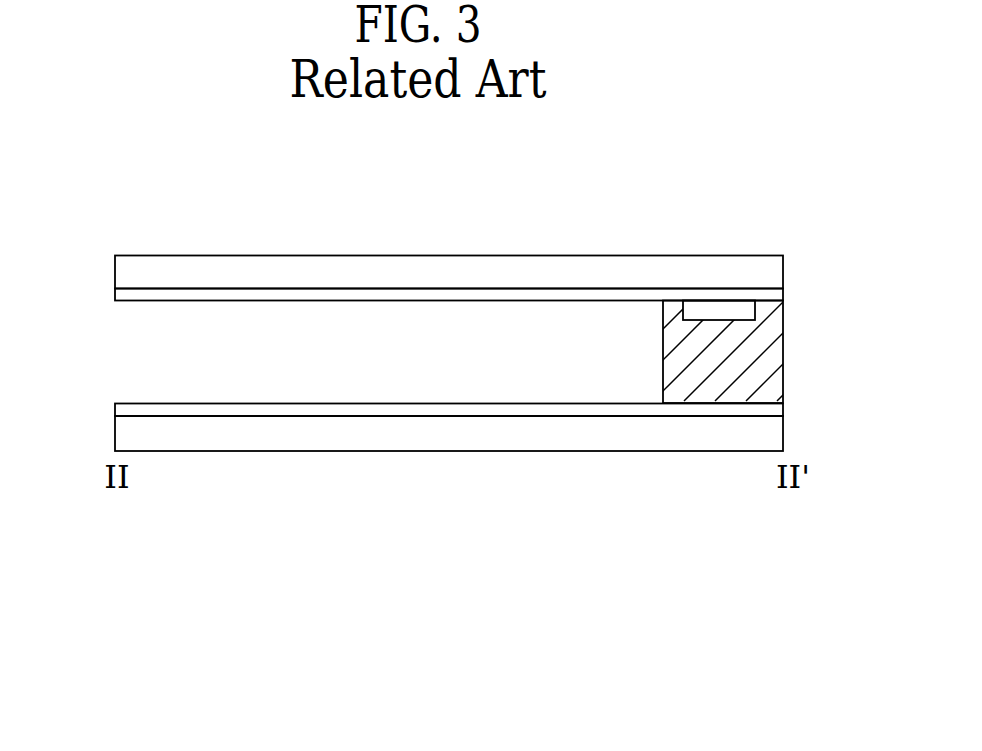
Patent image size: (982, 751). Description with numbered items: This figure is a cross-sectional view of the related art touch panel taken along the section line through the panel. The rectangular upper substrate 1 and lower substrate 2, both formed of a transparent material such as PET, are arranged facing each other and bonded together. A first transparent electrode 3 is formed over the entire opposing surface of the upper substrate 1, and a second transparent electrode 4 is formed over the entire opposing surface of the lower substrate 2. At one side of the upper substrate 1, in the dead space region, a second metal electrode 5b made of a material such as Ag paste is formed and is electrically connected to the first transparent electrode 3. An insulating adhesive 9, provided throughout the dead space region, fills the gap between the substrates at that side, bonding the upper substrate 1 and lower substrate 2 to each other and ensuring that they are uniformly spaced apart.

The upper substrate 1 is at (125, 275).
The lower substrate 2 is at (125, 433).
The first transparent electrode 3 is at (125, 296).
The second transparent electrode 4 is at (115, 411).
The second metal electrode 5b is at (742, 310).
The insulating adhesive 9 is at (775, 355).